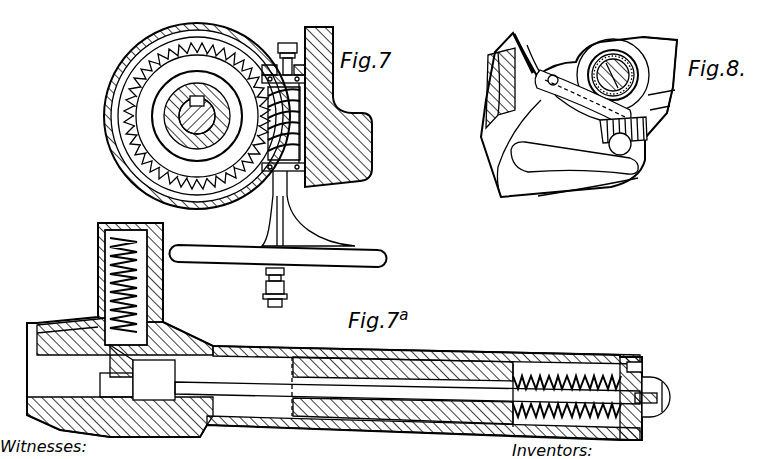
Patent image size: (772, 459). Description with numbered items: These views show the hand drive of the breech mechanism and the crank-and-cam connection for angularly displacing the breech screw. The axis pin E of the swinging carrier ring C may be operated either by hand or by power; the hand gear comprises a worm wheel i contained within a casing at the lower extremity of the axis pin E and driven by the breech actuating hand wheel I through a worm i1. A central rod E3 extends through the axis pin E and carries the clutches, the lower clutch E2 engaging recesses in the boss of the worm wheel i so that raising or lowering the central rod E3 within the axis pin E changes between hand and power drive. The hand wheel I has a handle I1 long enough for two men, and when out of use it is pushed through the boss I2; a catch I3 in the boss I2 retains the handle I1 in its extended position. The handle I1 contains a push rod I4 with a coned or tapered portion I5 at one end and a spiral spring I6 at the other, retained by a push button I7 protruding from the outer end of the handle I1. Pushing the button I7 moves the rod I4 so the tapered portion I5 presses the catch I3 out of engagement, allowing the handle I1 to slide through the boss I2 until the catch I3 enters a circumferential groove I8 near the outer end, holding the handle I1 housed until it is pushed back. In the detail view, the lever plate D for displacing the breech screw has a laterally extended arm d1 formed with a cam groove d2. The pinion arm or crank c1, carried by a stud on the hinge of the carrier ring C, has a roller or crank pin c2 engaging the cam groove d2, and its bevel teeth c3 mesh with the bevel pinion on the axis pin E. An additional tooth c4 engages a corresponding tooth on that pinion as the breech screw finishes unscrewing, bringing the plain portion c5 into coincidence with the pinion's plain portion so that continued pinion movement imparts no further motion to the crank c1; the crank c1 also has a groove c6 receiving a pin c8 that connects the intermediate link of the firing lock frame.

In FIG. 7, the worm wheel i is at (133, 68).
In FIG. 7, the worm i1 is at (273, 58).
In FIG. 7, the axis pin E is at (182, 98).
In FIG. 7, the lower clutch E2 is at (200, 148).
In FIG. 7, the central rod E3 is at (177, 117).
In FIG. 7, the breech actuating hand wheel I is at (217, 252).
In FIG. 7, the handle I1 is at (263, 280).
In FIG. 7A, the handle I1 is at (228, 400).
In FIG. 7, the boss I2 is at (288, 270).
In FIG. 7A, the boss I2 is at (56, 325).
In FIG. 7A, the catch I3 is at (143, 297).
In FIG. 7A, the push rod I4 is at (553, 393).
In FIG. 7A, the coned or tapered portion I5 is at (137, 372).
In FIG. 7A, the spiral spring I6 is at (600, 363).
In FIG. 7A, the push button I7 is at (647, 377).
In FIG. 7A, the circumferential groove I8 is at (527, 358).
In FIG. 8, the carrier ring C is at (603, 60).
In FIG. 8, the pinion arm or crank c1 is at (570, 77).
In FIG. 8, the roller or crank pin c2 is at (628, 152).
In FIG. 8, the bevel teeth c3 is at (643, 138).
In FIG. 8, the tooth c4 is at (676, 96).
In FIG. 8, the plain portion c5 is at (667, 60).
In FIG. 8, the lever c6 is at (575, 100).
In FIG. 8, the pivot c8 is at (552, 77).
In FIG. 8, the lever plate D is at (579, 115).
In FIG. 8, the laterally extended arm d1 is at (571, 160).
In FIG. 8, the cam groove d2 is at (590, 143).